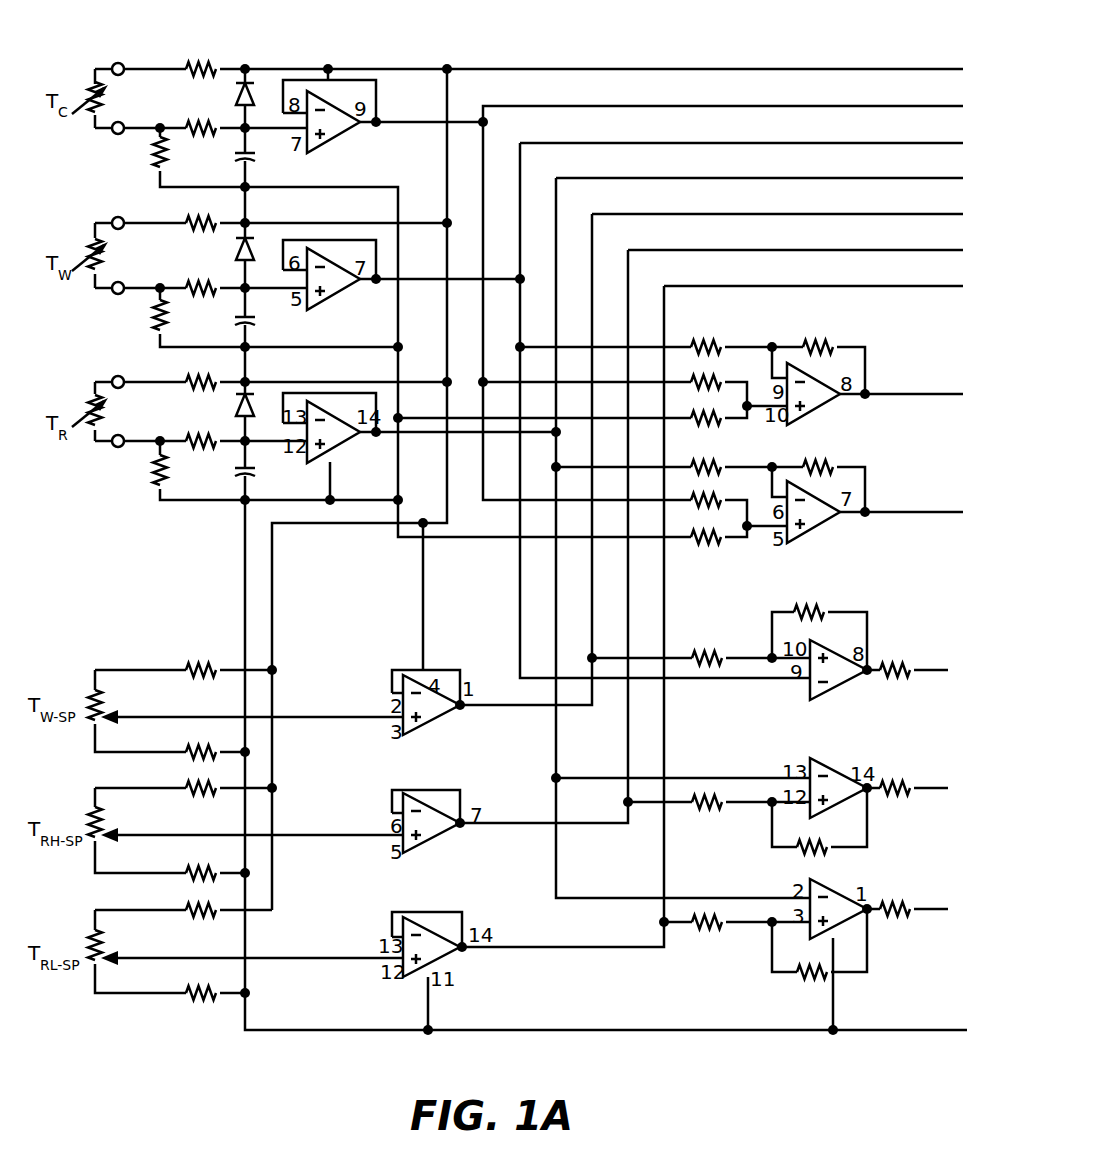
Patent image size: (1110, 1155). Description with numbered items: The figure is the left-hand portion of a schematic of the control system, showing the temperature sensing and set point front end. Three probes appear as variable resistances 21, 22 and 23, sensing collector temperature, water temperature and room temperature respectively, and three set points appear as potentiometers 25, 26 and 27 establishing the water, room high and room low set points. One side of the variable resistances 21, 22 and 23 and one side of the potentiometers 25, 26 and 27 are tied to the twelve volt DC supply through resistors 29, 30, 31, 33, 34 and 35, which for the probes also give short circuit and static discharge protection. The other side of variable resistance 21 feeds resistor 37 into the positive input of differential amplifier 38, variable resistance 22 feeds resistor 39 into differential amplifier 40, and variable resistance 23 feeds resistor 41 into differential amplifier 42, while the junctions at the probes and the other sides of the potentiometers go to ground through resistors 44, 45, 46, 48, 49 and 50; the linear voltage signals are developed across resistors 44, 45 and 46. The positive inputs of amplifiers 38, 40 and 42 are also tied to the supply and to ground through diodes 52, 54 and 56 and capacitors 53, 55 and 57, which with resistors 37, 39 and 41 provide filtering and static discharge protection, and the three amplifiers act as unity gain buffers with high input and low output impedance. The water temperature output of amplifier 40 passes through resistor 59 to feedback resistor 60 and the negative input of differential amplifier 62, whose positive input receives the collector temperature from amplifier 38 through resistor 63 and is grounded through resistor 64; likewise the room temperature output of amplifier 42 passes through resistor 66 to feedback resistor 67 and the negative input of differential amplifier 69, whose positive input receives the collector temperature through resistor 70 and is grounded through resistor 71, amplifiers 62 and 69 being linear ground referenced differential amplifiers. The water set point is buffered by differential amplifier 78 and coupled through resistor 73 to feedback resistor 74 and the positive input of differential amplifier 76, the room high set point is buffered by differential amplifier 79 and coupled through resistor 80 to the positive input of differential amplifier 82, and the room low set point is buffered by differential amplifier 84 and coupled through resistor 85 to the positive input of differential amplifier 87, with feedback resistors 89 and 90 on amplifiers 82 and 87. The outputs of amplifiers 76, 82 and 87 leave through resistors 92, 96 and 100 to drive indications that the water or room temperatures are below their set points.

The variable resistance 21 is at (86, 90).
The variable resistance 22 is at (92, 250).
The variable resistance 23 is at (92, 410).
The potentiometer 25 is at (86, 698).
The potentiometer 26 is at (90, 815).
The potentiometer 27 is at (90, 939).
The resistor 29 is at (203, 62).
The resistor 30 is at (187, 225).
The resistor 31 is at (185, 383).
The resistor 33 is at (198, 668).
The resistor 34 is at (190, 788).
The resistor 35 is at (190, 910).
The resistor 37 is at (187, 125).
The differential amplifier 38 is at (338, 146).
The resistor 39 is at (187, 289).
The differential amplifier 40 is at (330, 304).
The resistor 41 is at (180, 435).
The differential amplifier 42 is at (342, 442).
The resistor 44 is at (154, 159).
The resistor 45 is at (154, 321).
The resistor 46 is at (154, 477).
The resistor 48 is at (190, 752).
The resistor 49 is at (190, 873).
The resistor 50 is at (186, 993).
The diode 52 is at (254, 76).
The capacitor 53 is at (234, 158).
The diode 54 is at (234, 256).
The capacitor 55 is at (234, 320).
The diode 56 is at (234, 414).
The capacitor 57 is at (234, 476).
The resistor 59 is at (724, 342).
The resistor 60 is at (840, 342).
The differential amplifier 62 is at (828, 398).
The resistor 63 is at (697, 376).
The resistor 64 is at (697, 417).
The resistor 66 is at (697, 461).
The resistor 67 is at (830, 464).
The differential amplifier 69 is at (824, 526).
The resistor 70 is at (699, 498).
The resistor 71 is at (697, 536).
The resistor 73 is at (710, 650).
The resistor 74 is at (817, 604).
The differential amplifier 76 is at (840, 690).
The differential amplifier 78 is at (435, 721).
The differential amplifier 79 is at (433, 846).
The resistor 80 is at (714, 812).
The differential amplifier 82 is at (830, 774).
The differential amplifier 84 is at (458, 960).
The resistor 85 is at (718, 936).
The differential amplifier 87 is at (834, 904).
The resistor 89 is at (824, 841).
The resistor 90 is at (804, 976).
The resistor 92 is at (904, 660).
The resistor 96 is at (910, 778).
The resistor 100 is at (900, 904).